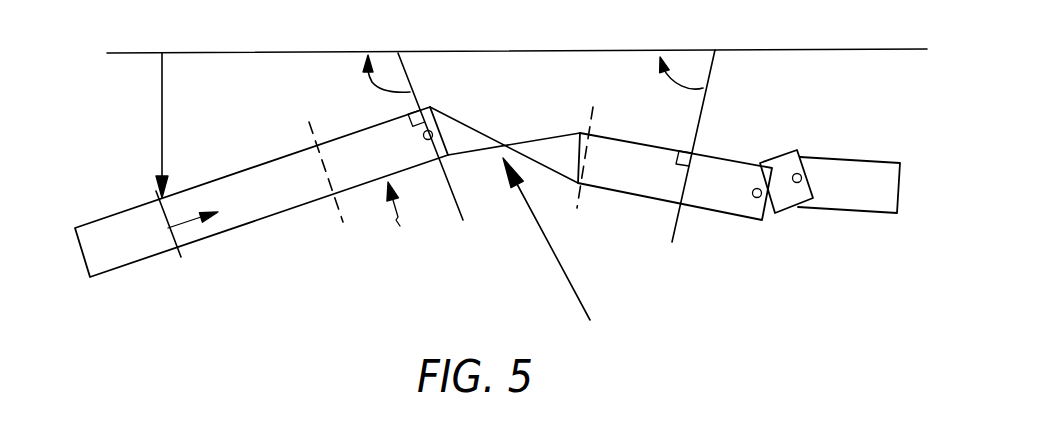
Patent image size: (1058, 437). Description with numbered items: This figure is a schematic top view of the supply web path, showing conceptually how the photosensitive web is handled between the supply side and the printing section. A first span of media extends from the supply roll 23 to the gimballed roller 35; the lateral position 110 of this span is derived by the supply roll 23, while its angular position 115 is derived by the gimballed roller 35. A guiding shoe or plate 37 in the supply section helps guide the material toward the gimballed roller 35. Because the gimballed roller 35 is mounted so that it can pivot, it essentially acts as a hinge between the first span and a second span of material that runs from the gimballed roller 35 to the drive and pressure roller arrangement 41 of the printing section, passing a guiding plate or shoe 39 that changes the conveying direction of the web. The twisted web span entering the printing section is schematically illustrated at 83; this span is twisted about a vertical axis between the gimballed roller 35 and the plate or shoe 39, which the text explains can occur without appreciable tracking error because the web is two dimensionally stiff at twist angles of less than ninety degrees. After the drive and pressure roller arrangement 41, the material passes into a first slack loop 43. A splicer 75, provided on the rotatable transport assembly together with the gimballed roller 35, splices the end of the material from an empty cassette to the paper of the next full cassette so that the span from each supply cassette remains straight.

The supply roll 23 is at (153, 188).
The gimballed roller 35 is at (428, 104).
The guiding shoe or plate 37 is at (308, 143).
The guiding plate or shoe 39 is at (590, 136).
The drive and pressure roller arrangement 41 is at (696, 150).
The first slack loop 43 is at (782, 160).
The splicer 75 is at (389, 223).
The twisted web span entering the printing section 83 is at (562, 272).
The lateral position 110 is at (162, 120).
The angular position 115 is at (372, 90).